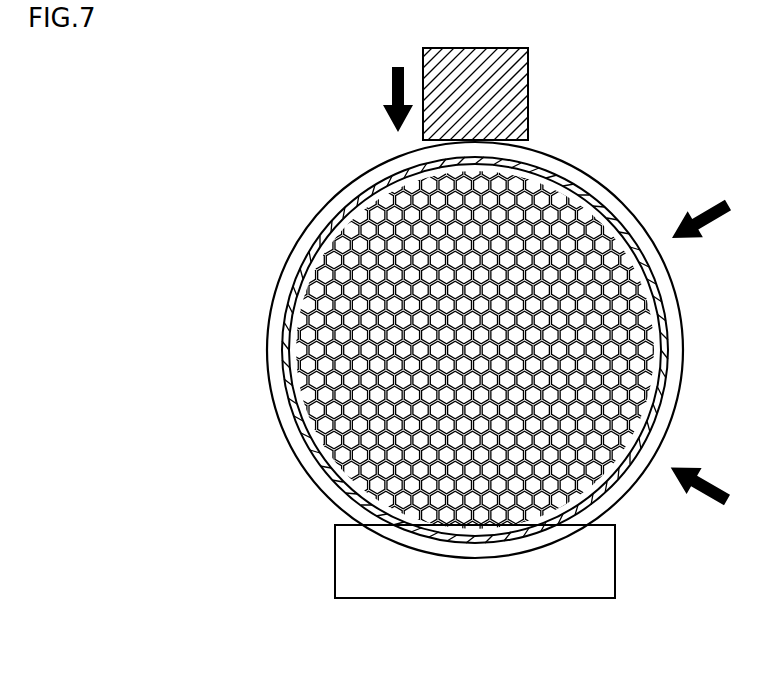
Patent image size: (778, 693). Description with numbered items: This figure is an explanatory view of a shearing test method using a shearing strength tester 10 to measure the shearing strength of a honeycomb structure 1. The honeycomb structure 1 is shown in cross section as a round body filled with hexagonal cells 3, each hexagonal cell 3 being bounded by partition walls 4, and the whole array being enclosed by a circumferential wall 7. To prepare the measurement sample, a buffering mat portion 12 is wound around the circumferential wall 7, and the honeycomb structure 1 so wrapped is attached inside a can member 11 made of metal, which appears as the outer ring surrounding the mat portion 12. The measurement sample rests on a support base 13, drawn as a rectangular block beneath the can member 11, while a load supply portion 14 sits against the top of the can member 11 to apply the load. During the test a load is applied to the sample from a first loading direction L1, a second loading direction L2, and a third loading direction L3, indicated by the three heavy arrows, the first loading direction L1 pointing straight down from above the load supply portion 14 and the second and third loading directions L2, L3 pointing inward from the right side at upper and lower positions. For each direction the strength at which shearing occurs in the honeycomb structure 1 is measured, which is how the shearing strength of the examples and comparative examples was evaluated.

The honeycomb structure 1 is at (228, 355).
The hexagonal cell 3 is at (633, 420).
The partition wall 4 is at (333, 490).
The circumferential wall 7 is at (302, 423).
The shearing strength tester 10 is at (186, 185).
The can member 11 is at (675, 305).
The mat portion 12 is at (585, 182).
The support base 13 is at (600, 570).
The load supply portion 14 is at (528, 80).
The first loading direction L1 is at (390, 90).
The second loading direction L2 is at (703, 208).
The third loading direction L3 is at (712, 483).